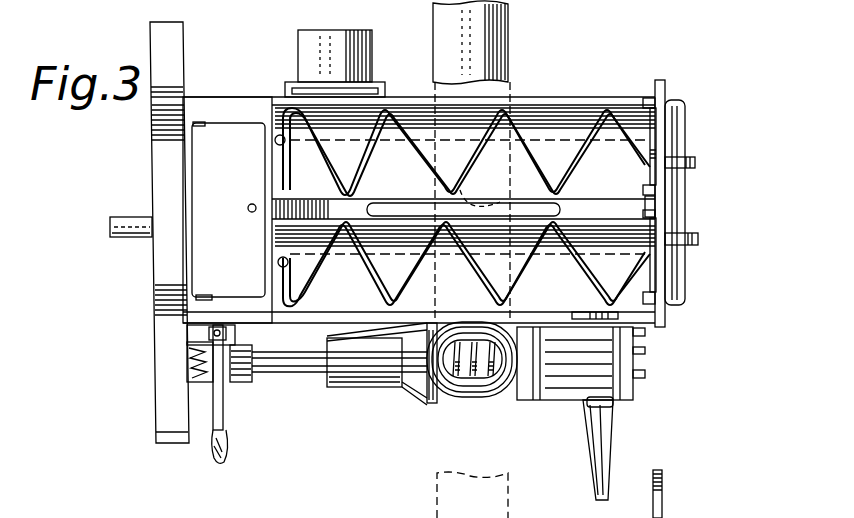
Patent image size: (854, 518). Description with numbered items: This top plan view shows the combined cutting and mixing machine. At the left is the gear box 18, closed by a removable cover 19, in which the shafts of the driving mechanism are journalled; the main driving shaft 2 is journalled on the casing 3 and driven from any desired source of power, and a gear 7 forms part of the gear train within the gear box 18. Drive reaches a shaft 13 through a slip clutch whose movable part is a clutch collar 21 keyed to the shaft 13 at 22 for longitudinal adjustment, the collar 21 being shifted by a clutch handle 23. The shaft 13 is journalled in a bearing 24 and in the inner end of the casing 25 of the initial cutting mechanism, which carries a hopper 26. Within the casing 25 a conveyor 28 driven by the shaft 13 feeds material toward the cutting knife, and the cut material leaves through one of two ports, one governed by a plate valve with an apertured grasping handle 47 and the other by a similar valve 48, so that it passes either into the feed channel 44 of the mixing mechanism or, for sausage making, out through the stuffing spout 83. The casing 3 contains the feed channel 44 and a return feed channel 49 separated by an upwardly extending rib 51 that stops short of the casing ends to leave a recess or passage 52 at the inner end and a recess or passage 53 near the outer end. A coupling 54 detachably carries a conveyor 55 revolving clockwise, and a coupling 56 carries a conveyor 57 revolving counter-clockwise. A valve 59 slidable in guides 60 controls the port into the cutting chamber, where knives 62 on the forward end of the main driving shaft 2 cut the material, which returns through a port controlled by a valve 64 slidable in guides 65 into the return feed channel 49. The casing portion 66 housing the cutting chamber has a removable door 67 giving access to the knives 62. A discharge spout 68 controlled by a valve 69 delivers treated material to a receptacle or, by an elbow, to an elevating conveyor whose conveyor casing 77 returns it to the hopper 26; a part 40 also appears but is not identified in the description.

The main driving shaft 2 is at (116, 224).
The casing 3 is at (590, 93).
The gear 7 is at (567, 356).
The shaft 13 is at (316, 368).
The gear box 18 is at (160, 178).
The removable cover 19 is at (228, 211).
The clutch collar 21 is at (239, 385).
The key 22 is at (252, 353).
The clutch handle 23 is at (229, 447).
The bearing 24 is at (352, 387).
The casing of the initial cutting mechanism 25 is at (518, 400).
The hopper 26 is at (484, 386).
The conveyor 28 is at (469, 379).
The rod 40 is at (678, 494).
The feed channel 44 is at (466, 264).
The grasping handle 47 is at (580, 312).
The valve 48 is at (608, 403).
The feed channel 49 is at (466, 152).
The upwardly extending rib 51 is at (466, 205).
The recess or passage 52 is at (313, 204).
The recess or passage 53 is at (612, 188).
The coupling 54 is at (278, 263).
The conveyor 55 is at (358, 262).
The coupling 56 is at (275, 141).
The conveyor 57 is at (318, 177).
The valve 59 is at (656, 273).
The guides 60 is at (660, 213).
The knives 62 is at (491, 495).
The valve 64 is at (658, 135).
The guides 65 is at (659, 103).
The casing portion 66 is at (675, 203).
The removable door 67 is at (690, 156).
The discharge spout 68 is at (316, 47).
The valve 69 is at (320, 88).
The conveyor casing 77 is at (447, 42).
The stuffing spout 83 is at (597, 448).